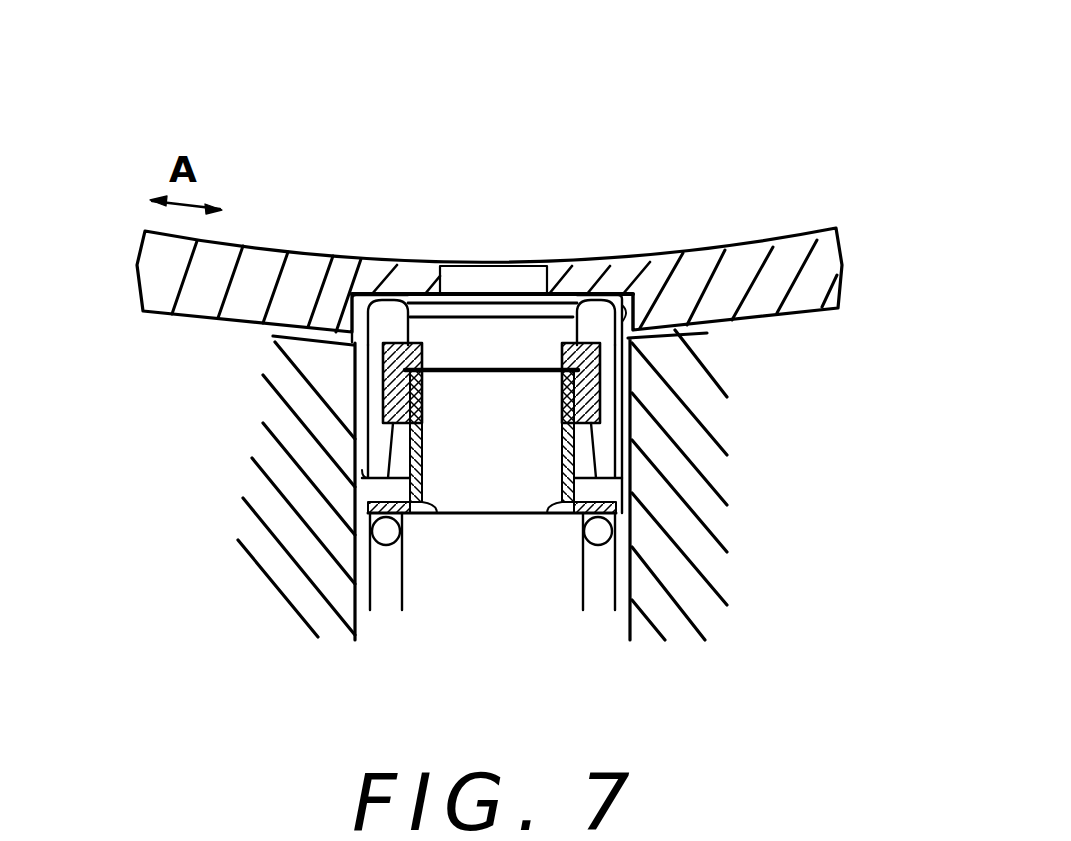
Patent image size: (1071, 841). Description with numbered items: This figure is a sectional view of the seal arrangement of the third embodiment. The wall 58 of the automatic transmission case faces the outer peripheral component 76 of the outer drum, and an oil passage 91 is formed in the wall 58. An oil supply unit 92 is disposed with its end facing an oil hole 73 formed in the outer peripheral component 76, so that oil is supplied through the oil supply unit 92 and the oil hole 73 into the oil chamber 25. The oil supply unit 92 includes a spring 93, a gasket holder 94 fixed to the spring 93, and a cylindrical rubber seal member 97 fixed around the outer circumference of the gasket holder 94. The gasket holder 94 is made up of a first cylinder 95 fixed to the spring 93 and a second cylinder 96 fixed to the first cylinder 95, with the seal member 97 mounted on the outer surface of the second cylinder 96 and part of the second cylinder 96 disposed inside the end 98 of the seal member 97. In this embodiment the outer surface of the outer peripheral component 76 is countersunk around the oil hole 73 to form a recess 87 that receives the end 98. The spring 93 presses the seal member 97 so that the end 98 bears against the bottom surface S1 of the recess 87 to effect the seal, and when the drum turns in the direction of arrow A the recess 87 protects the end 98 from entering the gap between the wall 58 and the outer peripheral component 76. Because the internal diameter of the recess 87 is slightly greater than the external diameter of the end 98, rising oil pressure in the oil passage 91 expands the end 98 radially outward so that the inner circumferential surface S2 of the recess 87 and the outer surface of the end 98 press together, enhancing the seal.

The oil chamber 25 is at (520, 229).
The wall 58 is at (690, 493).
The oil hole 73 is at (518, 283).
The outer peripheral component 76 is at (262, 280).
The recess 87 is at (374, 287).
The oil passage 91 is at (552, 567).
The oil supply unit 92 is at (355, 530).
The spring 93 is at (388, 574).
The gasket holder 94 is at (446, 409).
The first cylinder 95 is at (431, 504).
The second cylinder 96 is at (395, 386).
The seal member 97 is at (352, 454).
The end 98 is at (390, 312).
The bottom surface S1 is at (648, 308).
The inner circumferential surface S2 is at (632, 363).